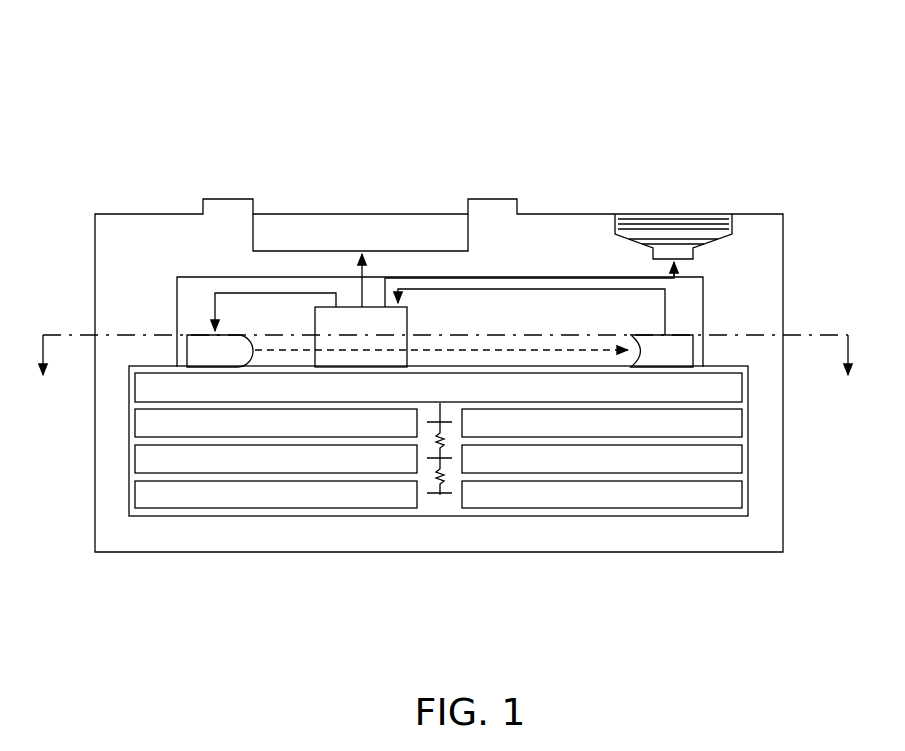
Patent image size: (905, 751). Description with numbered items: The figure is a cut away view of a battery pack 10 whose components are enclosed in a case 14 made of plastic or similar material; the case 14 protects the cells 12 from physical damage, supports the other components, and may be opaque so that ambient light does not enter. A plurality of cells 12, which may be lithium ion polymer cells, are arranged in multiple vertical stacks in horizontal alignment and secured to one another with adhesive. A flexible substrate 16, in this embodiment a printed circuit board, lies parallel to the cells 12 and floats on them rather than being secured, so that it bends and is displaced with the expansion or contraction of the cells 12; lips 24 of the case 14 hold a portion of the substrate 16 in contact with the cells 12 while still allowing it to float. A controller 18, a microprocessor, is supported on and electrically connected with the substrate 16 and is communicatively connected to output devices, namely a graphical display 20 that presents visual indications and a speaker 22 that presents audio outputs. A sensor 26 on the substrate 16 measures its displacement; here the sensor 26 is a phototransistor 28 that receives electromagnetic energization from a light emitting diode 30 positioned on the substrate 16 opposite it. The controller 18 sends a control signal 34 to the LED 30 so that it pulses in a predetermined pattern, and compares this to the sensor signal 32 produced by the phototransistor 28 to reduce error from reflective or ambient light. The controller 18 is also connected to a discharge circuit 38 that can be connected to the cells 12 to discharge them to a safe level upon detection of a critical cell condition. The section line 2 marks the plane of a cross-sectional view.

The battery pack 10 is at (715, 81).
The cell 12 is at (438, 459).
The case 14 is at (768, 285).
The substrate 16 is at (438, 441).
The controller 18 is at (361, 337).
The graphical display 20 is at (360, 232).
The speaker 22 is at (696, 212).
The lip 24 is at (157, 362).
The sensor 26 is at (683, 302).
The phototransistor 28 is at (474, 351).
The light emitting diode 30 is at (220, 351).
The sensor signal 32 is at (523, 290).
The control signal 34 is at (247, 290).
The discharge circuit 38 is at (438, 507).
The section line 2- 2 is at (445, 372).